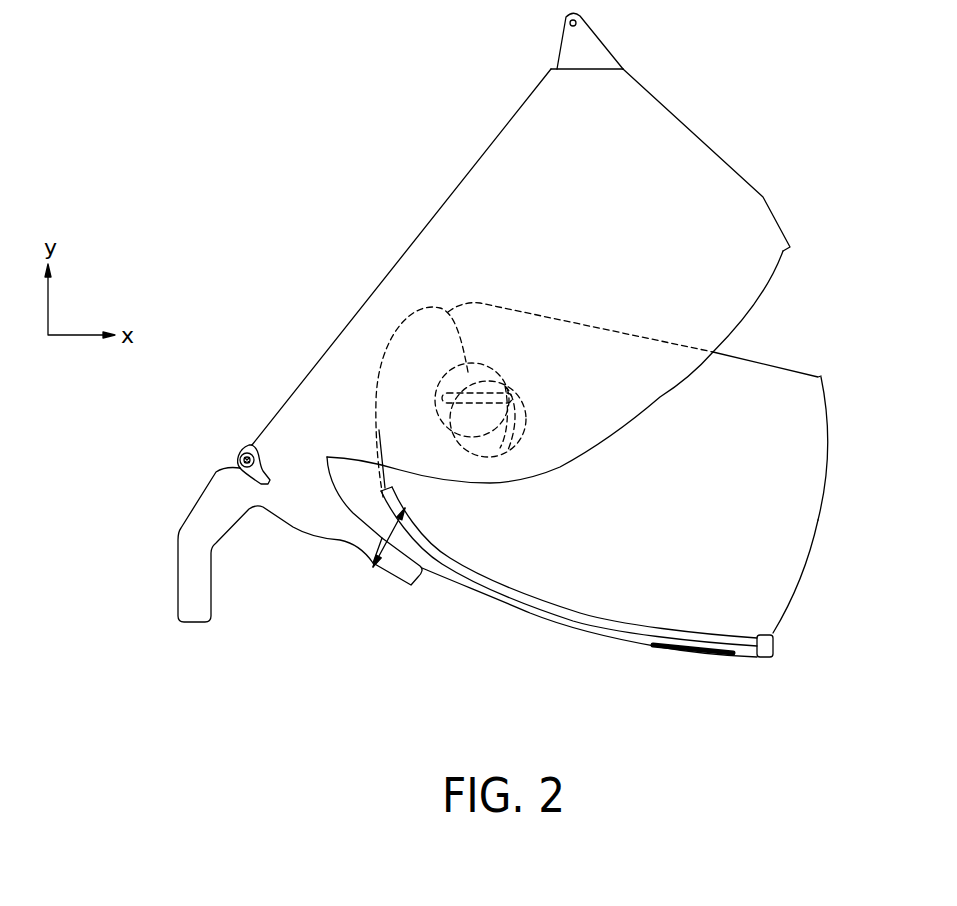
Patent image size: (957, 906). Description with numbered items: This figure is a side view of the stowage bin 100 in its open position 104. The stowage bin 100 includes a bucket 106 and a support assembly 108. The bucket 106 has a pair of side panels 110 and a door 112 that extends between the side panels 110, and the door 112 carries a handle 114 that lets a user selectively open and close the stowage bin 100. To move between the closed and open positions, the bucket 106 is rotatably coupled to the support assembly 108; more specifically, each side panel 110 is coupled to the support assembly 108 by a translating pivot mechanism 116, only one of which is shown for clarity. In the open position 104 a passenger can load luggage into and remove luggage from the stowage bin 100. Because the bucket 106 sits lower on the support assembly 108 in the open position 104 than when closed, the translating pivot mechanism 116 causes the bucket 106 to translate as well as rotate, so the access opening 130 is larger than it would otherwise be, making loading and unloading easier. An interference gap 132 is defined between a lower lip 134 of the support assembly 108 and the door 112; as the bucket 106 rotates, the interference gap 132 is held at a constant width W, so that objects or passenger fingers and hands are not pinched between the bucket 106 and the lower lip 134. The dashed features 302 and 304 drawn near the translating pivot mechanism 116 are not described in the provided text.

The stowage bin 100 is at (352, 97).
The open position 104 is at (850, 380).
The bucket 106 is at (805, 492).
The support assembly 108 is at (657, 108).
The side panels 110 is at (763, 598).
The door 112 is at (613, 639).
The handle 114 is at (707, 657).
The translating pivot mechanism 116 is at (419, 373).
The access opening 130 is at (842, 433).
The interference gap 132 is at (431, 583).
The lower lip 134 is at (412, 578).
The circular region 302 is at (455, 430).
The dashed region 304 is at (440, 308).
The width W is at (373, 568).